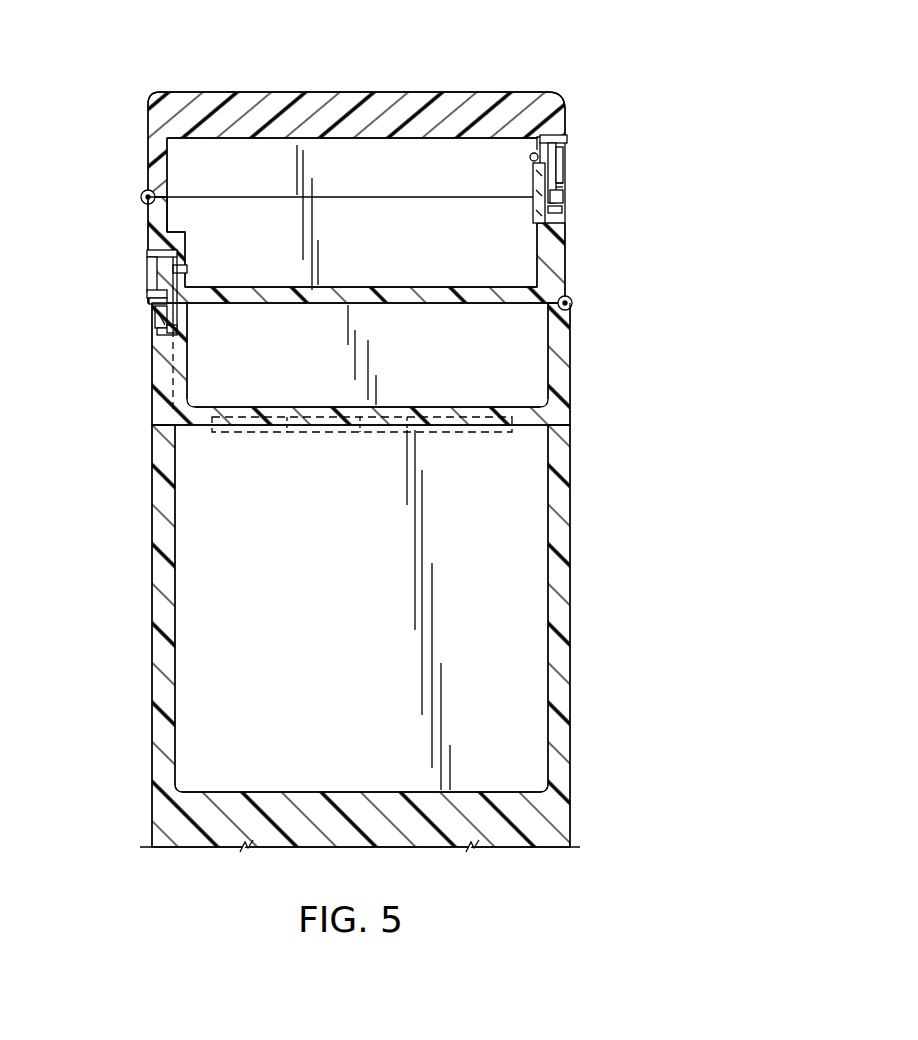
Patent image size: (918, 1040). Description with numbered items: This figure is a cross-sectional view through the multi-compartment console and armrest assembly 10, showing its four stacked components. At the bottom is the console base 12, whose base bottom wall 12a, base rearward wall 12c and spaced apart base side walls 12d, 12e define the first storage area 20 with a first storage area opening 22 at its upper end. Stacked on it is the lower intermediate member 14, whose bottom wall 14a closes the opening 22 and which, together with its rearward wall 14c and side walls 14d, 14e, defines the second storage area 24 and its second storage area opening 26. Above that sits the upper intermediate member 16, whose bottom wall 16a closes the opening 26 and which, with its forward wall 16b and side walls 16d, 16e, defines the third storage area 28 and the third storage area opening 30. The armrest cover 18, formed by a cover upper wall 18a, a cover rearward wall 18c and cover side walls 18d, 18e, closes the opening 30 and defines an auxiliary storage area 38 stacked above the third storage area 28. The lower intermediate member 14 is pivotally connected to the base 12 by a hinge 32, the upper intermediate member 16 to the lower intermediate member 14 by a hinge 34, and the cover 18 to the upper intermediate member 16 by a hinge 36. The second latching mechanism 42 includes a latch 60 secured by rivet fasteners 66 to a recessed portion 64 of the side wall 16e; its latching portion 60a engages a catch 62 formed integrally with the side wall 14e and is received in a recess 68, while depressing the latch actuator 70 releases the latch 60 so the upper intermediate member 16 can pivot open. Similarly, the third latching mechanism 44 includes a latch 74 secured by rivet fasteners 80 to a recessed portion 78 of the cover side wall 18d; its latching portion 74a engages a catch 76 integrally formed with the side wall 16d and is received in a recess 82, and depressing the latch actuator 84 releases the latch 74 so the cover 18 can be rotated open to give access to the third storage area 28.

The multi-compartment console and armrest assembly 10 is at (642, 91).
The console base 12 is at (578, 697).
The base bottom wall 12a is at (493, 825).
The base rearward wall 12c is at (518, 525).
The base side wall 12d is at (560, 605).
The base side wall 12e is at (165, 598).
The lower intermediate member 14 is at (575, 362).
The lower intermediate member bottom wall 14a is at (482, 407).
The lower intermediate rearward wall 14c is at (522, 340).
The lower intermediate member side wall 14d is at (560, 388).
The lower intermediate member side wall 14e is at (162, 385).
The upper intermediate member 16 is at (575, 248).
The upper intermediate member bottom wall 16a is at (432, 288).
The upper intermediate member forward wall 16b is at (432, 210).
The upper intermediate member side wall 16d is at (563, 262).
The upper intermediate member side wall 16e is at (155, 223).
The armrest cover 18 is at (574, 104).
The cover upper wall 18a is at (373, 100).
The cover rearward wall 18c is at (318, 178).
The cover side wall 18d is at (533, 170).
The cover side wall 18e is at (160, 150).
The first storage area 20 is at (373, 592).
The first storage area opening 22 is at (205, 418).
The second storage area 24 is at (433, 363).
The second storage area opening 26 is at (238, 290).
The third storage area 28 is at (395, 242).
The third storage area opening 30 is at (165, 197).
The hinge 32 is at (313, 433).
The hinge 34 is at (575, 303).
The hinge 36 is at (141, 196).
The auxiliary storage area 38 is at (380, 172).
The second latching mechanism 42 is at (152, 300).
The third latching mechanism 44 is at (560, 175).
The latch 60 is at (148, 272).
The latching portion 60a is at (160, 335).
The catch 62 is at (157, 313).
The recessed portion 64 is at (148, 252).
The rivet fasteners 66 is at (195, 270).
The recess 68 is at (178, 330).
The latch actuator 70 is at (148, 292).
The latch 74 is at (560, 165).
The latching portion 74a is at (556, 210).
The catch 76 is at (560, 198).
The recessed portion 78 is at (562, 147).
The rivet fasteners 80 is at (531, 155).
The recess 82 is at (532, 222).
The latch actuator 84 is at (560, 185).